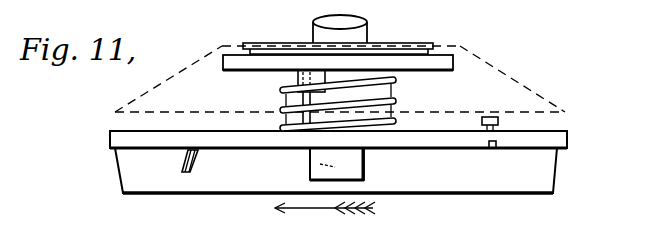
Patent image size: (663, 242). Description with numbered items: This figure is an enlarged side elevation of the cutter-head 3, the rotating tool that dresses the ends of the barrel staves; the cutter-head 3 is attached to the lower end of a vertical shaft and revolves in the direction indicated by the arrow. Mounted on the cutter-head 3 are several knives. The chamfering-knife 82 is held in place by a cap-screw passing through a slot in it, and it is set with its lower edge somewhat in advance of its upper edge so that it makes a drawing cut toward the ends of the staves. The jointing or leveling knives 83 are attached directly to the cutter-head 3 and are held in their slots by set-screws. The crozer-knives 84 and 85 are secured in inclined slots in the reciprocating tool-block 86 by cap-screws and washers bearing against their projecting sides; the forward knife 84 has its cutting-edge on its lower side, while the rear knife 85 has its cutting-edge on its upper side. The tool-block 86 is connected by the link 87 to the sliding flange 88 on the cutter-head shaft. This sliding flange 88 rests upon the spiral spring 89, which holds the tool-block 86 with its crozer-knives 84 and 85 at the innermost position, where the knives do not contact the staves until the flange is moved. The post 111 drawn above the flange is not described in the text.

The cutter-head 3 is at (338, 162).
The chamfering-knife 82 is at (198, 160).
The jointing or leveling knives 83 is at (492, 148).
The crozer-knife 84 is at (313, 166).
The crozer-knife 85 is at (364, 168).
The reciprocating tool-block 86 is at (357, 171).
The link 87 is at (289, 129).
The sliding flange 88 is at (309, 44).
The spiral spring 89 is at (396, 97).
The post 111 is at (340, 22).